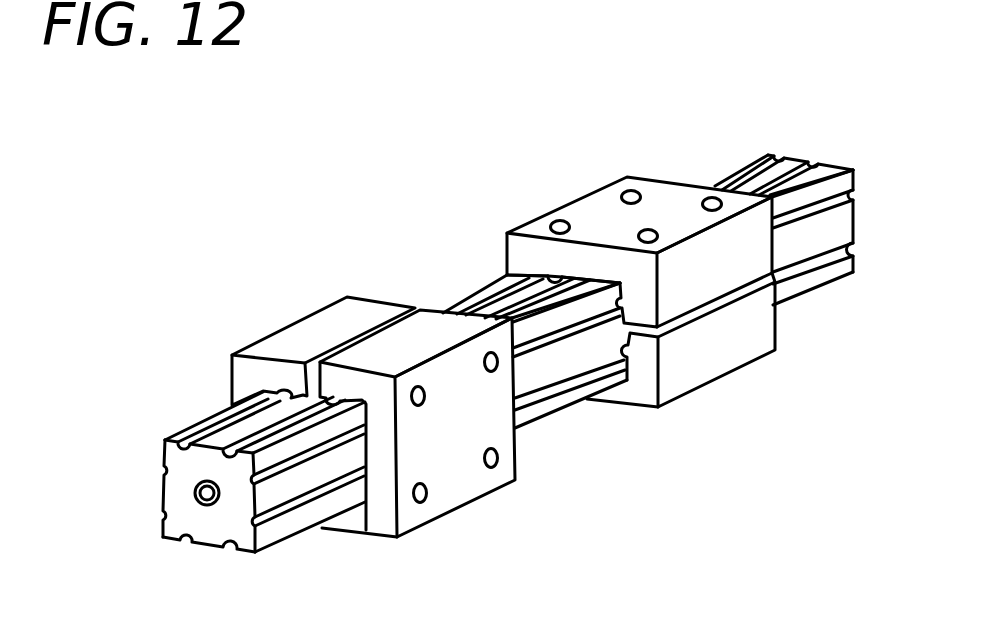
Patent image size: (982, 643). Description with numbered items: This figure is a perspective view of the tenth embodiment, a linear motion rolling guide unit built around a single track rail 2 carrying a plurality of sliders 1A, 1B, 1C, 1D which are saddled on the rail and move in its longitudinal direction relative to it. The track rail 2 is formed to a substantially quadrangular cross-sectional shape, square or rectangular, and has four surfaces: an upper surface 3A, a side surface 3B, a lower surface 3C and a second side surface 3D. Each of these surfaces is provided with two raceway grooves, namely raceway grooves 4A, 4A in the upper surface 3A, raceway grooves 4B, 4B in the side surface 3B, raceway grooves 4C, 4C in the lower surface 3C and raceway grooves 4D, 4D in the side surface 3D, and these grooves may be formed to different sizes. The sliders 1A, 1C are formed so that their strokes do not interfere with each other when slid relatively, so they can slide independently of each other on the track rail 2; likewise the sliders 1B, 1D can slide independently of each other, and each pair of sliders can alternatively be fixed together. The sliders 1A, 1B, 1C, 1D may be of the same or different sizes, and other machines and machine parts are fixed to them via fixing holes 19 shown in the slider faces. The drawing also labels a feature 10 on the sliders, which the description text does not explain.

The track rail 2 is at (744, 164).
The slider 1A is at (610, 210).
The slider 1B is at (465, 465).
The slider 1C is at (715, 352).
The slider 1D is at (303, 332).
The upper surface 3A is at (797, 163).
The side surface 3B is at (560, 360).
The lower surface 3C is at (205, 547).
The side surface 3D is at (160, 485).
The raceway grooves 4A is at (257, 433).
The raceway grooves 4B is at (820, 212).
The raceway grooves 4C is at (232, 546).
The raceway grooves 4D is at (162, 505).
The projection of slider 10 is at (548, 272).
The fixing holes 19 is at (483, 355).